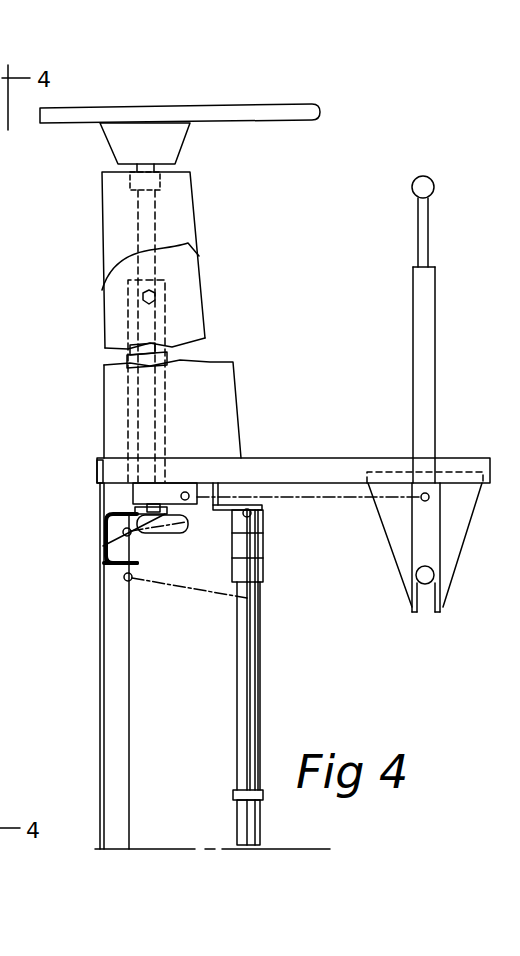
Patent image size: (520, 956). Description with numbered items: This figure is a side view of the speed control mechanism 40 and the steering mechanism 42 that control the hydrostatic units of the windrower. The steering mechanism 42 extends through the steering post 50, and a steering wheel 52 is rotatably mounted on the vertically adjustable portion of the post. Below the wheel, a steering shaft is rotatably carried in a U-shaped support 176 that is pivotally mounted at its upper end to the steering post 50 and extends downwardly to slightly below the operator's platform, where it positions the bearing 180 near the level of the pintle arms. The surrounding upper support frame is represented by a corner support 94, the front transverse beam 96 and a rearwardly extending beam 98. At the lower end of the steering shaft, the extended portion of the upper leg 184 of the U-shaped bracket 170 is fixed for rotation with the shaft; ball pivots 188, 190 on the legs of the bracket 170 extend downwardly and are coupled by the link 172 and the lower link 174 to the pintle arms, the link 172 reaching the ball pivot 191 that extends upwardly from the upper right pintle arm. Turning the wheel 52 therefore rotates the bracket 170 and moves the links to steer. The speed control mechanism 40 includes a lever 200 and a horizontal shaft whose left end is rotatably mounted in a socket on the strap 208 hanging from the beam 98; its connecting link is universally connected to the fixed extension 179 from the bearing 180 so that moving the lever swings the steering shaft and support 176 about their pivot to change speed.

The speed control mechanism 40 is at (387, 420).
The steering mechanism 42 is at (82, 608).
The steering post 50 is at (157, 263).
The steering wheel 52 is at (268, 105).
The corner supports 94 is at (105, 665).
The front transverse beam 96 is at (100, 460).
The rearwardly extending beams 98 is at (275, 458).
The U-shaped bracket 170 is at (106, 566).
The link 172 is at (102, 543).
The lower link 174 is at (212, 600).
The U-shaped support 176 is at (173, 490).
The fixed extension 179 is at (440, 540).
The bearing 180 is at (100, 490).
The upper leg 184 is at (177, 520).
The ball pivot 188 is at (123, 532).
The ball pivot 190 is at (131, 580).
The ball pivot 191 is at (255, 513).
The lever 200 is at (420, 328).
The strap 208 is at (392, 537).